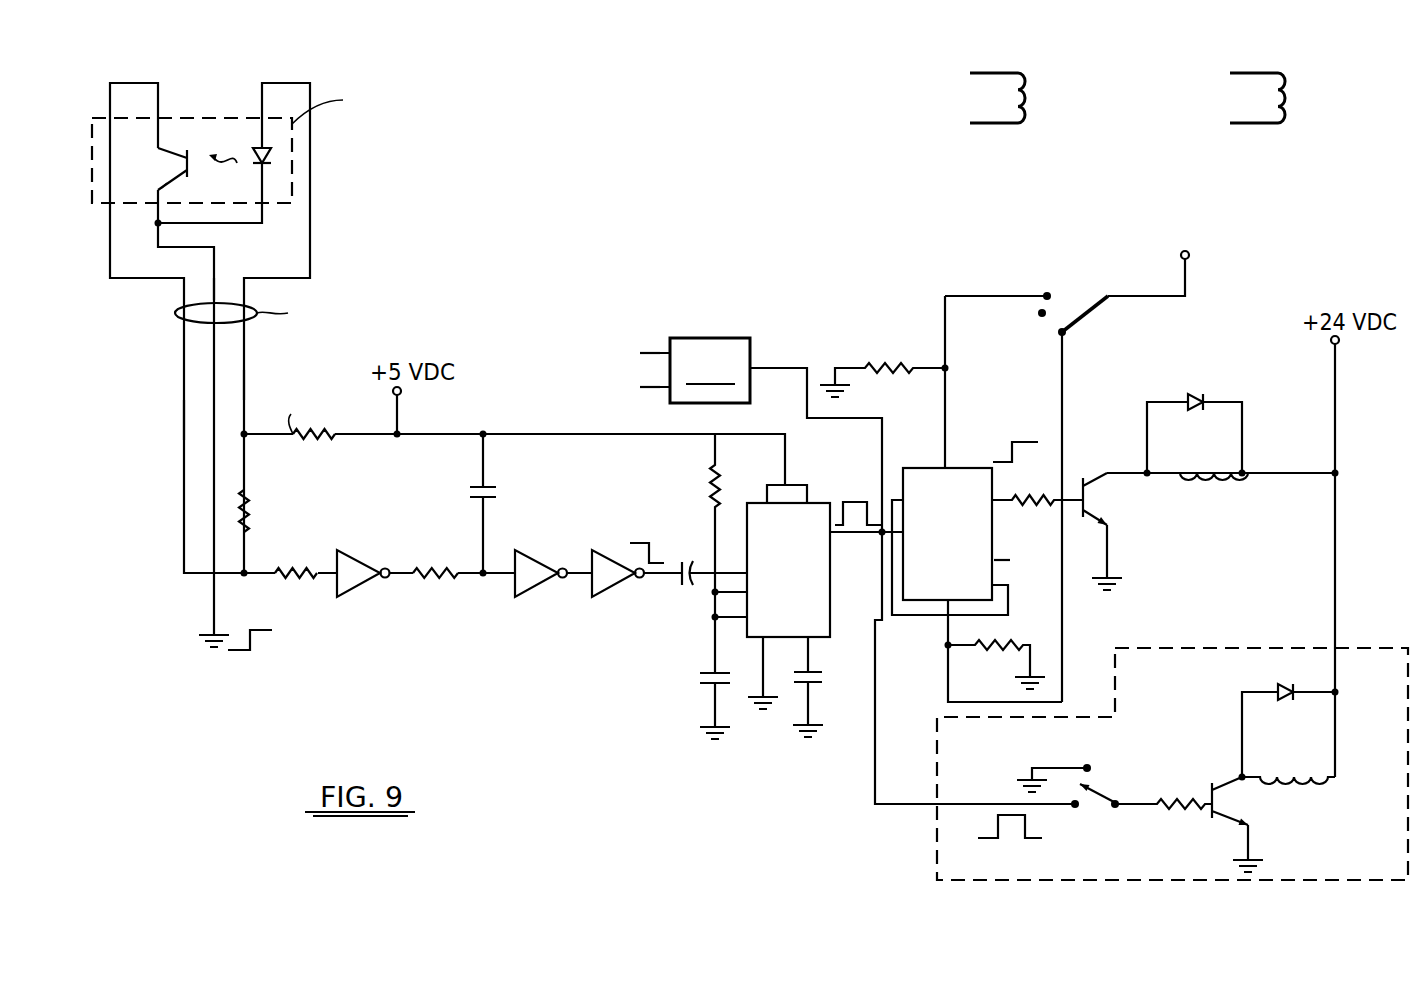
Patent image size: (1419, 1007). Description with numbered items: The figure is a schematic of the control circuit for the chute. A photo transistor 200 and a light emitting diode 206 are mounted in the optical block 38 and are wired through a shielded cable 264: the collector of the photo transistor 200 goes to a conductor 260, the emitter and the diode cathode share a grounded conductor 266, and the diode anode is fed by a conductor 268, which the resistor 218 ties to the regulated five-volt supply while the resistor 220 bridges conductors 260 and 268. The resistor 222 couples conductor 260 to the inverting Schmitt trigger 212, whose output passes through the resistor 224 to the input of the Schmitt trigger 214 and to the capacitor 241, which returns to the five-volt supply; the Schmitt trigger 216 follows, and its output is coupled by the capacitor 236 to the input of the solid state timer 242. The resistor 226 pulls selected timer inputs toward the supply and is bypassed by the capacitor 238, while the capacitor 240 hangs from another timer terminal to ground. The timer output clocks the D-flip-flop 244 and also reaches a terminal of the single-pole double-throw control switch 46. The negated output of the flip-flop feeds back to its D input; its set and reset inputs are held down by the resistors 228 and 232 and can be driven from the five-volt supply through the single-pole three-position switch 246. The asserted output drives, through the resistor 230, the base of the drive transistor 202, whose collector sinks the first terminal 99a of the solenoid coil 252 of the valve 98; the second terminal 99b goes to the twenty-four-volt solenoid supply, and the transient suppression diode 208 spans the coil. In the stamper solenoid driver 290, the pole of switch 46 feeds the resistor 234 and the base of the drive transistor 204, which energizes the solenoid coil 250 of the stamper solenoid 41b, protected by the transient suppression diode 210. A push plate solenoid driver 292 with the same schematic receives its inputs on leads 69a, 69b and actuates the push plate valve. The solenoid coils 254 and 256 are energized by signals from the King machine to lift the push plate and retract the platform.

The optical block 38 is at (283, 117).
The photo transistor 200 is at (160, 148).
The light emitting diode 206 is at (272, 158).
The electrical conductor 266 is at (218, 278).
The shielded cable 264 is at (176, 313).
The conductor 260 is at (184, 418).
The conductor 268 is at (245, 382).
The resistor 218 is at (322, 432).
The resistor 220 is at (244, 492).
The resistor 222 is at (318, 568).
The inverting Schmitt trigger 212 is at (340, 556).
The resistor 224 is at (412, 548).
The inverting Schmitt trigger 214 is at (558, 536).
The inverting Schmitt trigger 216 is at (598, 557).
The capacitor 236 is at (692, 578).
The capacitor 241 is at (497, 504).
The resistor 226 is at (717, 490).
The capacitor 238 is at (707, 675).
The capacitor 240 is at (812, 676).
The solid state timer 242 is at (826, 509).
The sensor input lead 69a is at (640, 353).
The sensor input lead 69b is at (640, 387).
The push plate solenoid driver 292 is at (857, 571).
The resistor 228 is at (867, 376).
The single-pole three-position switch 246 is at (1093, 312).
The D-flip-flop 244 is at (966, 554).
The resistor 230 is at (1010, 503).
The resistor 232 is at (978, 649).
The drive transistor 202 is at (1100, 478).
The transient suppression diode 208 is at (1205, 398).
The first terminal of the solenoid coil 99a is at (1147, 470).
The second terminal of the solenoid coil 99b is at (1244, 470).
The solenoid coil 252 is at (1244, 471).
The valve 98 is at (1245, 511).
The transient suppression diode 210 is at (1275, 687).
The stamper solenoid 41b is at (1335, 732).
The solenoid coil 250 is at (1335, 750).
The drive transistor 204 is at (1237, 826).
The resistor 234 is at (1175, 809).
The single-pole double-throw control switch 46 is at (1108, 805).
The stamper solenoid driver 290 is at (937, 833).
The solenoid coil 254 is at (978, 126).
The solenoid coil 256 is at (1238, 126).